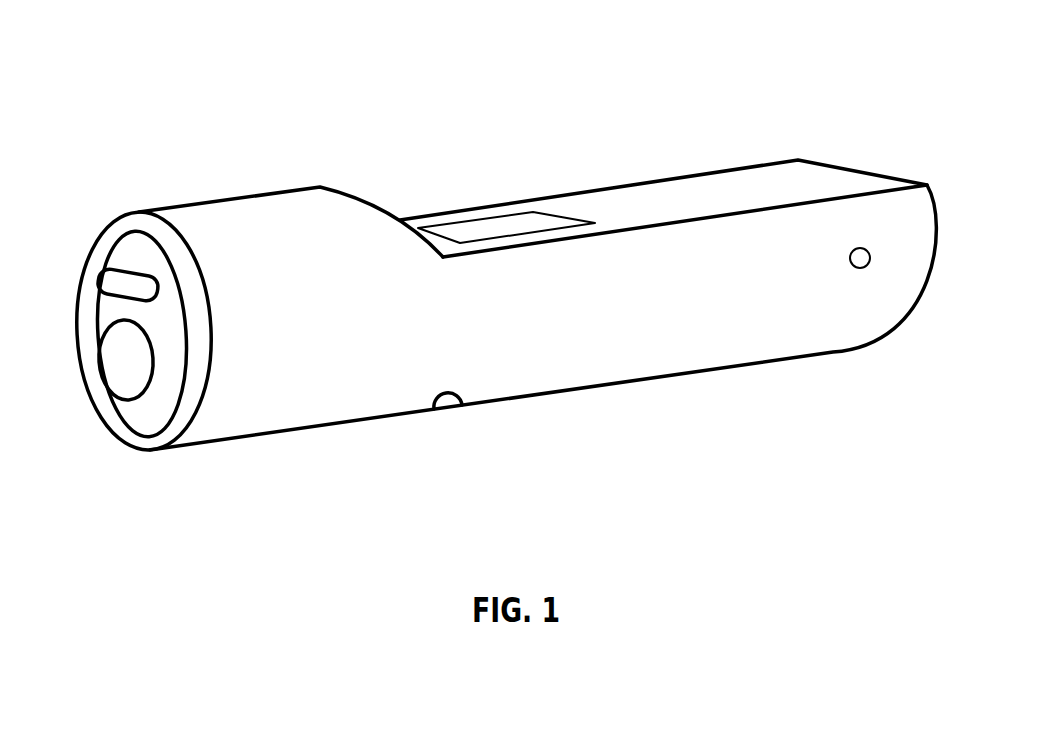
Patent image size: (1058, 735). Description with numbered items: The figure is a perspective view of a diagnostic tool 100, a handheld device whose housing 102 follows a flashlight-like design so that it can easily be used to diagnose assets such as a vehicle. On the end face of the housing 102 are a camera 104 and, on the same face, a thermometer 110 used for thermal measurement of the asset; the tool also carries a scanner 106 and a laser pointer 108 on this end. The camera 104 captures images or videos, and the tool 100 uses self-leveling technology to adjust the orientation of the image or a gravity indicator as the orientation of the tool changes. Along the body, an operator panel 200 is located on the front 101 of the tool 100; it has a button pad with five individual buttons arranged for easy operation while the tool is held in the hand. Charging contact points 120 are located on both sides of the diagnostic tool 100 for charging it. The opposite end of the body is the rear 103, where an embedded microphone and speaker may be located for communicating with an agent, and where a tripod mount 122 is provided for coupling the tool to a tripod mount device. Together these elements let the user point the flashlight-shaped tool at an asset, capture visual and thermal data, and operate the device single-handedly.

The diagnostic tool 100 is at (490, 273).
The front 101 is at (630, 206).
The housing 102 is at (275, 218).
The rear 103 is at (647, 436).
The camera 104 is at (94, 430).
The scanner 106 is at (111, 211).
The laser pointer 108 is at (133, 282).
The thermometer 110 is at (135, 388).
The charging contact points 120 is at (857, 268).
The tripod mount 122 is at (450, 407).
The operator panel 200 is at (472, 220).